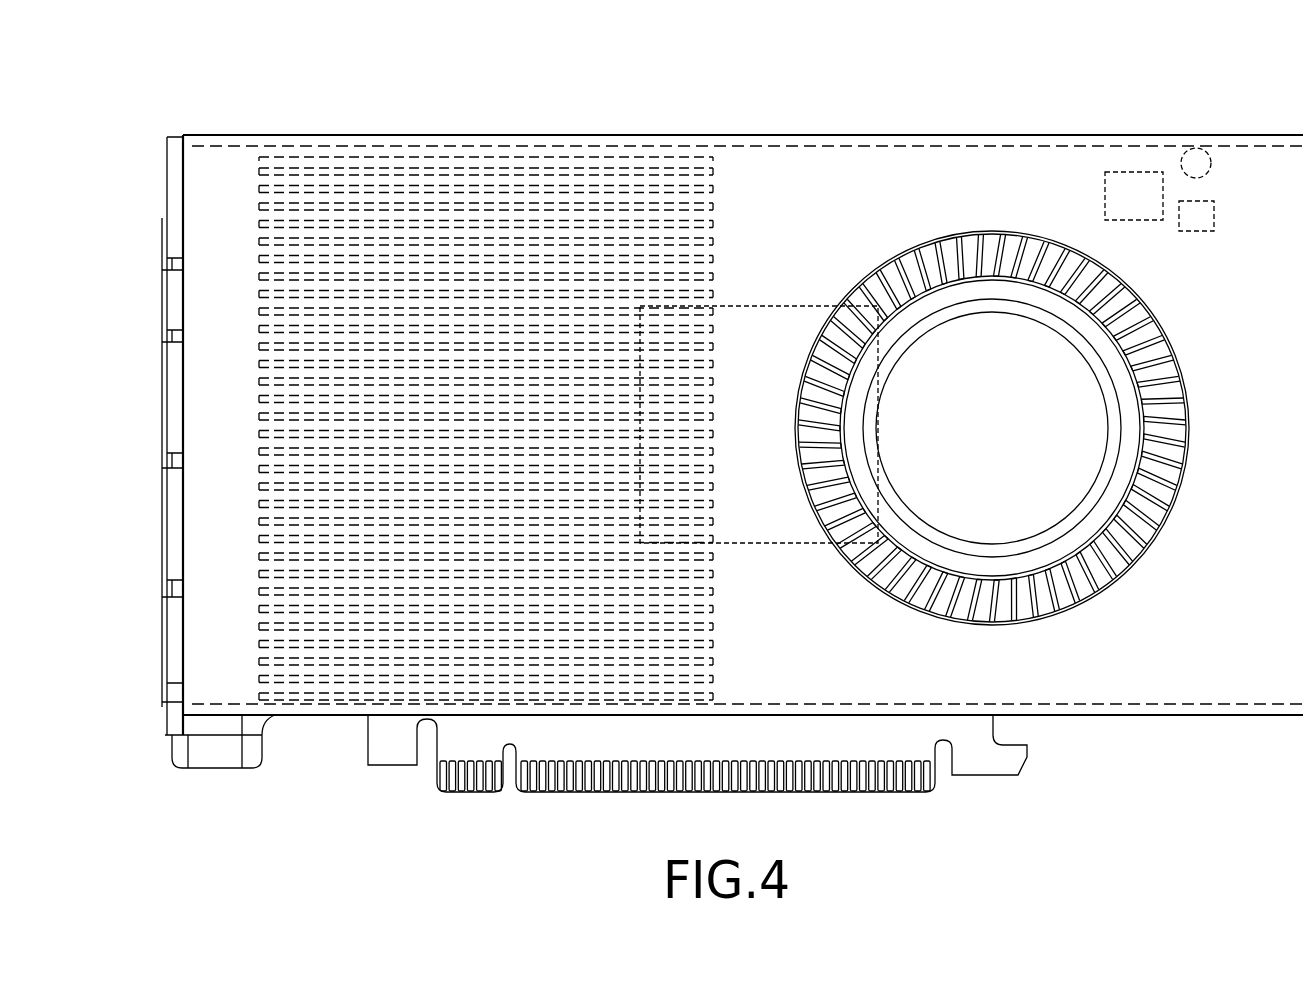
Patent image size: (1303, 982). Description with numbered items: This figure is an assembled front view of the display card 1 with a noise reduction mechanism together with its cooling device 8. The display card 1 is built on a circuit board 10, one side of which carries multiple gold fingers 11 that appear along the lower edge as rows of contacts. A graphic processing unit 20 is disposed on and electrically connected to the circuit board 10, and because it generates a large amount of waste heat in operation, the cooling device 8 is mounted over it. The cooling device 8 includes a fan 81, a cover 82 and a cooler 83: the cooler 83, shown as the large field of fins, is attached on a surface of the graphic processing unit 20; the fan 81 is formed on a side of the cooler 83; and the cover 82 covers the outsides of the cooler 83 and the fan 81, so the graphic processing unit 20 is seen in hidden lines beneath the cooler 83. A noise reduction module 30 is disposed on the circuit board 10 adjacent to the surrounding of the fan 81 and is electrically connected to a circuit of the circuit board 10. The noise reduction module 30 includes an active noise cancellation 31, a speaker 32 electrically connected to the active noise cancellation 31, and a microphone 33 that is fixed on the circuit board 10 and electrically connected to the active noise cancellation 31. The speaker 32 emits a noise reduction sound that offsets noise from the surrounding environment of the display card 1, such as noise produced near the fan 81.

The display card 1 is at (732, 447).
The cooling device 8 is at (539, 130).
The circuit board 10 is at (470, 745).
The gold fingers 11 is at (608, 783).
The graphic processing unit 20 is at (748, 306).
The noise reduction module 30 is at (1098, 68).
The active noise cancellation 31 is at (1132, 182).
The speaker 32 is at (1205, 212).
The microphone 33 is at (1192, 160).
The fan 81 is at (1000, 232).
The cover 82 is at (840, 170).
The cooler 83 is at (325, 175).